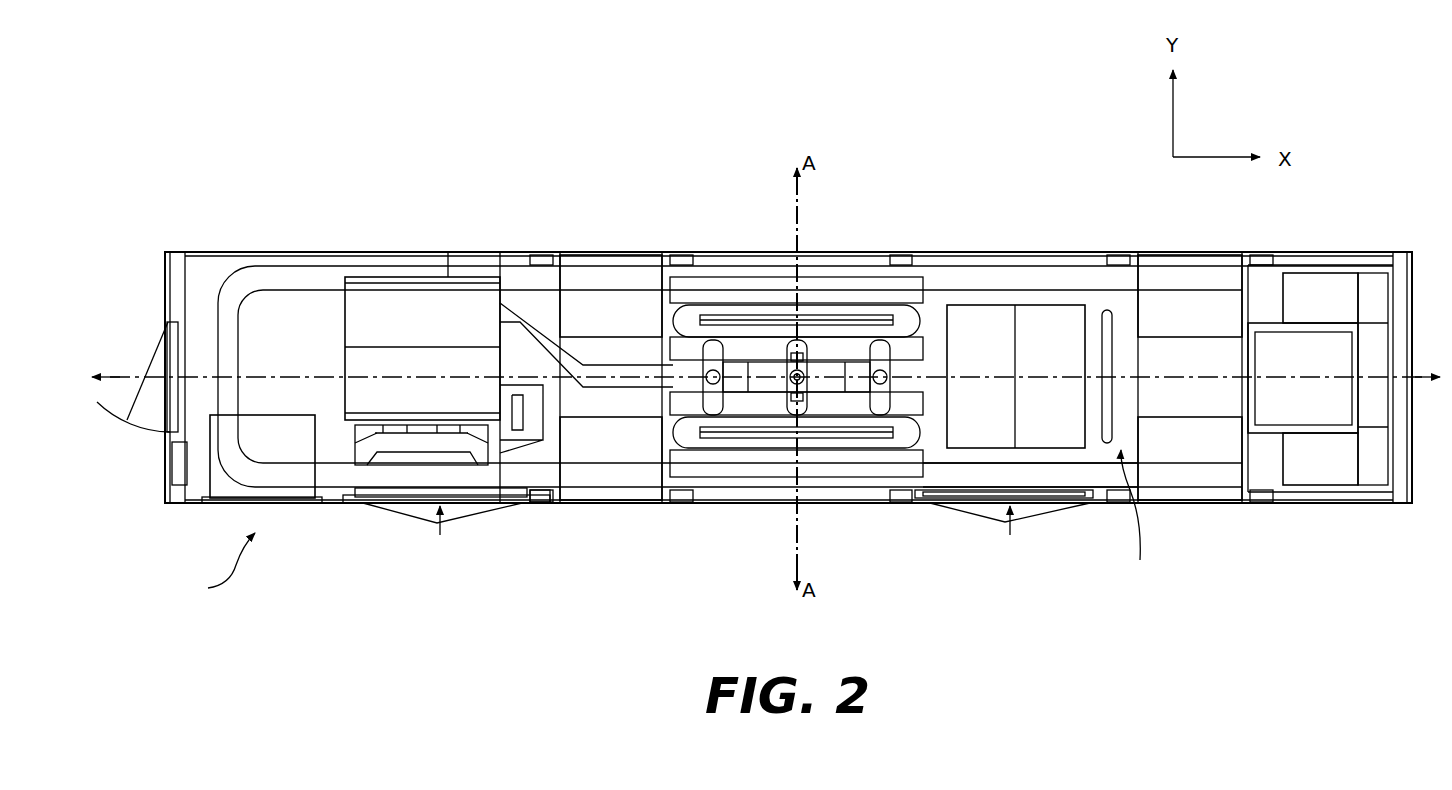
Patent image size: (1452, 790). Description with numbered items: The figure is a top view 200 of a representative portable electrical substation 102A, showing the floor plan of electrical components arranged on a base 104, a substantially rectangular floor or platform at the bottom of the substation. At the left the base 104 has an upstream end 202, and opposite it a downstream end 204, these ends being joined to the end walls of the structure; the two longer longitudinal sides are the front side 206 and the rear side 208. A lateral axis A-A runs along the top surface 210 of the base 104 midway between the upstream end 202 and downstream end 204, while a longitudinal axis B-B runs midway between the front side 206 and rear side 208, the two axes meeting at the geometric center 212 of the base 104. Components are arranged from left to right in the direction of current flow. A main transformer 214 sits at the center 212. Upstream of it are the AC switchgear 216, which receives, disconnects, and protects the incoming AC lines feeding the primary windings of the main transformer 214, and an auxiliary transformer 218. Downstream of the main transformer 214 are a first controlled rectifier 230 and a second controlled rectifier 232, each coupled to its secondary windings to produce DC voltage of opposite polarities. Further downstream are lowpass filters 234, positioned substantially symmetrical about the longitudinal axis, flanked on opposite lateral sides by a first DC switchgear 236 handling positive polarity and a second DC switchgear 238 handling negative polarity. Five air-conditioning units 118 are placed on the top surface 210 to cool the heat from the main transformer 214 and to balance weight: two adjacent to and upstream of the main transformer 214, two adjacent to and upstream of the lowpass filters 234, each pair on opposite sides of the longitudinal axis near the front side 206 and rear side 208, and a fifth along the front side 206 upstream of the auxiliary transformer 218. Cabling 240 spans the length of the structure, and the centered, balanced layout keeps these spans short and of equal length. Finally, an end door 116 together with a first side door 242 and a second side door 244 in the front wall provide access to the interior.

The substation 102A is at (208, 573).
The base 104 is at (1144, 520).
The end door 116 is at (150, 360).
The air-conditioning units 118 is at (726, 377).
The top view 200 is at (764, 459).
The upstream end 202 is at (166, 290).
The downstream end 204 is at (1393, 335).
The front side 206 is at (545, 503).
The rear side 208 is at (442, 252).
The top surface 210 is at (978, 455).
The geometric center 212 is at (797, 365).
The main transformer 214 is at (876, 448).
The AC switchgear 216 is at (405, 305).
The auxiliary transformer 218 is at (402, 452).
The first controlled rectifier 230 is at (978, 337).
The second controlled rectifier 232 is at (1003, 413).
The lowpass filters 234 is at (1343, 398).
The first DC switchgear 236 is at (1325, 295).
The second DC switchgear 238 is at (1315, 455).
The cabling 240 is at (612, 275).
The first side door 242 is at (437, 526).
The second side door 244 is at (1020, 520).